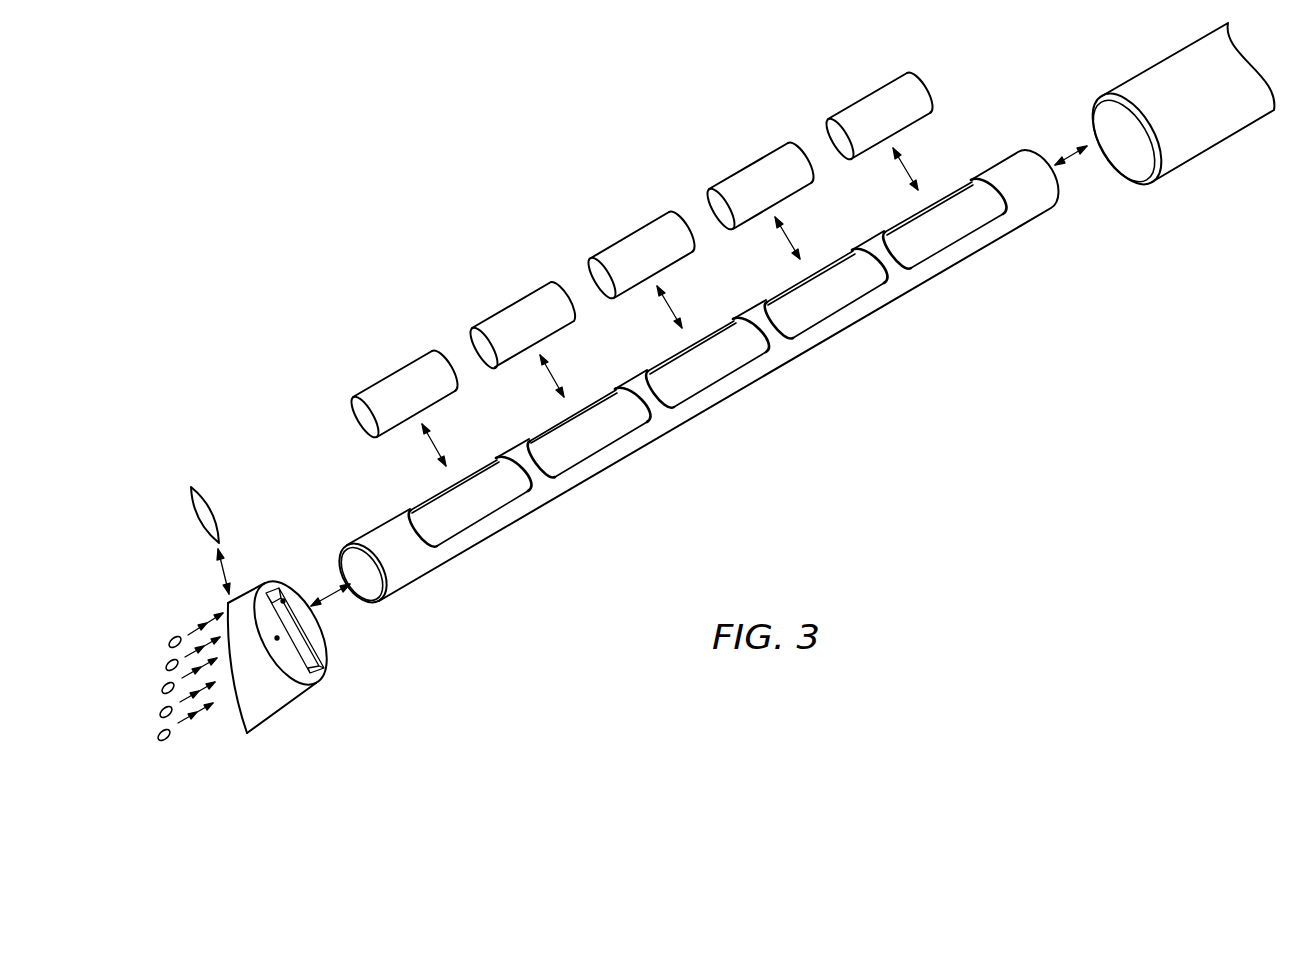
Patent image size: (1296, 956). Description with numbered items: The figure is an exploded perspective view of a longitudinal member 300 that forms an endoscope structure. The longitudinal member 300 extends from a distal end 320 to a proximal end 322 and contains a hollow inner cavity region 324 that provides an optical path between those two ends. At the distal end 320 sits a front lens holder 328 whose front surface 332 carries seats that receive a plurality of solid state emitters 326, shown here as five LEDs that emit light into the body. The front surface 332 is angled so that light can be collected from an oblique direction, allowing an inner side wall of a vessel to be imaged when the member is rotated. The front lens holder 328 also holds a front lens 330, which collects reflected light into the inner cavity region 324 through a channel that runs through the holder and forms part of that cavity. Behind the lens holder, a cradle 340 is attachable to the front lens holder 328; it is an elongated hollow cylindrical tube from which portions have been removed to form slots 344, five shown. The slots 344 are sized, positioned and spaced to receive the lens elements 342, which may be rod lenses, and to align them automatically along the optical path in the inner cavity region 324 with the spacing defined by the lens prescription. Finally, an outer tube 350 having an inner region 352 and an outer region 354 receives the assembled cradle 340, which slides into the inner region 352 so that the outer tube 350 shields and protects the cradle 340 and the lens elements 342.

The longitudinal member 300 is at (345, 122).
The distal end 320 is at (263, 406).
The proximal end 322 is at (1112, 212).
The hollow inner cavity region 324 is at (310, 632).
The solid state emitters 326 is at (168, 668).
The front lens holder 328 is at (282, 689).
The front lens 330 is at (200, 487).
The front surface 332 is at (232, 712).
The cradle 340 is at (722, 396).
The lens elements 342 is at (626, 244).
The slots 344 is at (478, 500).
The outer tube 350 is at (1166, 47).
The inner region 352 is at (1112, 120).
The outer region 354 is at (1202, 122).